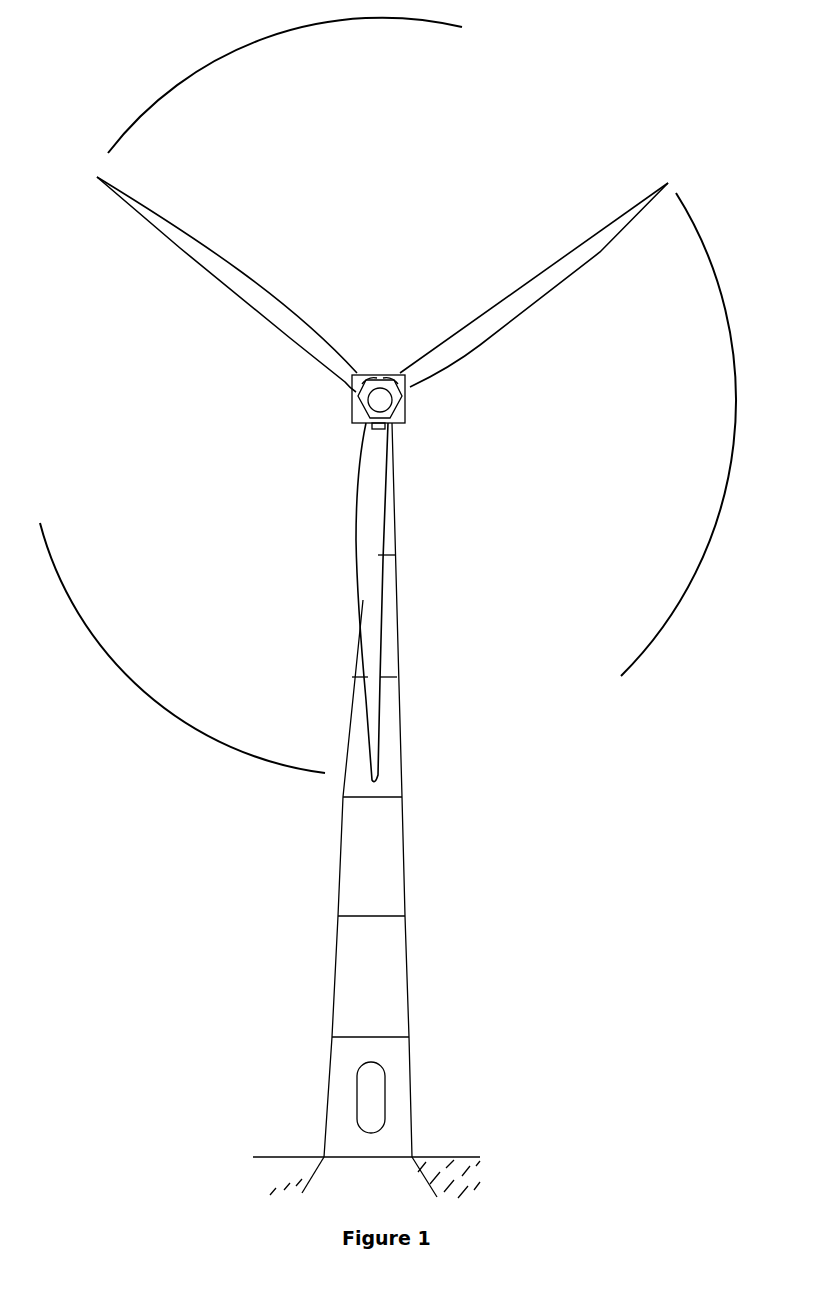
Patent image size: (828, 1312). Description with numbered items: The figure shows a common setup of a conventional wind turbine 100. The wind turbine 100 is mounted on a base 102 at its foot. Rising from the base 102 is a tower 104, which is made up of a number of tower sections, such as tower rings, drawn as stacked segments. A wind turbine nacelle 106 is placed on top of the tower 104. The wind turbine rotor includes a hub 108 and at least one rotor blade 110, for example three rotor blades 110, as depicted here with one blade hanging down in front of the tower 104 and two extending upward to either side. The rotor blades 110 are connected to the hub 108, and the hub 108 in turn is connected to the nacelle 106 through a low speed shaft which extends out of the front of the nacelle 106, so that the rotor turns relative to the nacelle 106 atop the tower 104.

The wind turbine 100 is at (312, 991).
The base 102 is at (313, 1183).
The tower 104 is at (397, 868).
The wind turbine nacelle 106 is at (403, 422).
The hub 108 is at (360, 398).
The rotor blade 110 is at (377, 640).